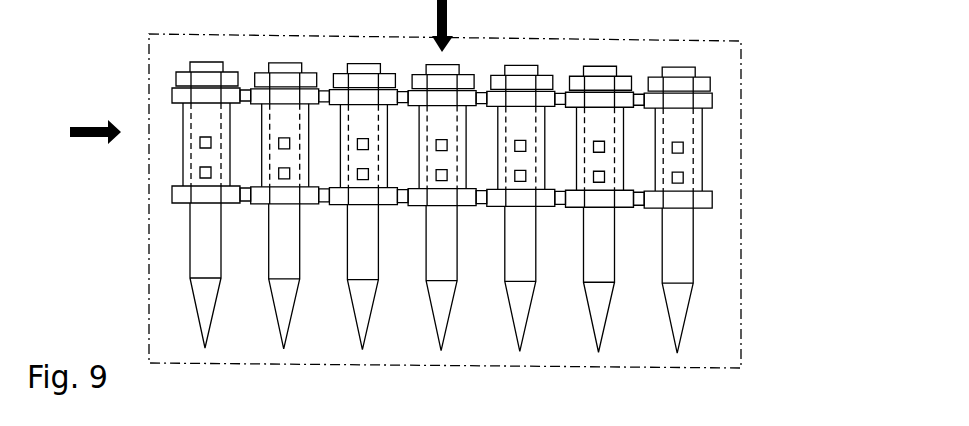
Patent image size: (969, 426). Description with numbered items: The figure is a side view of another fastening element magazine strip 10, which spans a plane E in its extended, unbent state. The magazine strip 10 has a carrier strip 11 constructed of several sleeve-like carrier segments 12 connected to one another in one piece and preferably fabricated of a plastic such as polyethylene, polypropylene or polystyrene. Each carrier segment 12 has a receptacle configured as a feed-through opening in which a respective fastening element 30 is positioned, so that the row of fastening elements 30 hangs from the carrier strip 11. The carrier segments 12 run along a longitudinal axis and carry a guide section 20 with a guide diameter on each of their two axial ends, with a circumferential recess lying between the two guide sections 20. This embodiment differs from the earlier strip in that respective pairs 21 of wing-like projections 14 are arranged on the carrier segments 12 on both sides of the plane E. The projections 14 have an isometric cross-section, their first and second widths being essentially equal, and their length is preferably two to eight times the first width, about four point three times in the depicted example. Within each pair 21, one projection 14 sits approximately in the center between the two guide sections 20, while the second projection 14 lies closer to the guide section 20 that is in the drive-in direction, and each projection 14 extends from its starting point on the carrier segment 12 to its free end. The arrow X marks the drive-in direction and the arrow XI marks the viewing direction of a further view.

The fastening element magazine strip 10 is at (118, 59).
The carrier strip 11 is at (636, 204).
The carrier segment 12 is at (700, 122).
The projection 14 is at (679, 148).
The guide section 20 is at (712, 97).
The pair of projections 21 is at (200, 170).
The fastening element 30 is at (687, 240).
The plane E is at (742, 53).
The direction X is at (447, 13).
The viewing direction XI is at (74, 126).